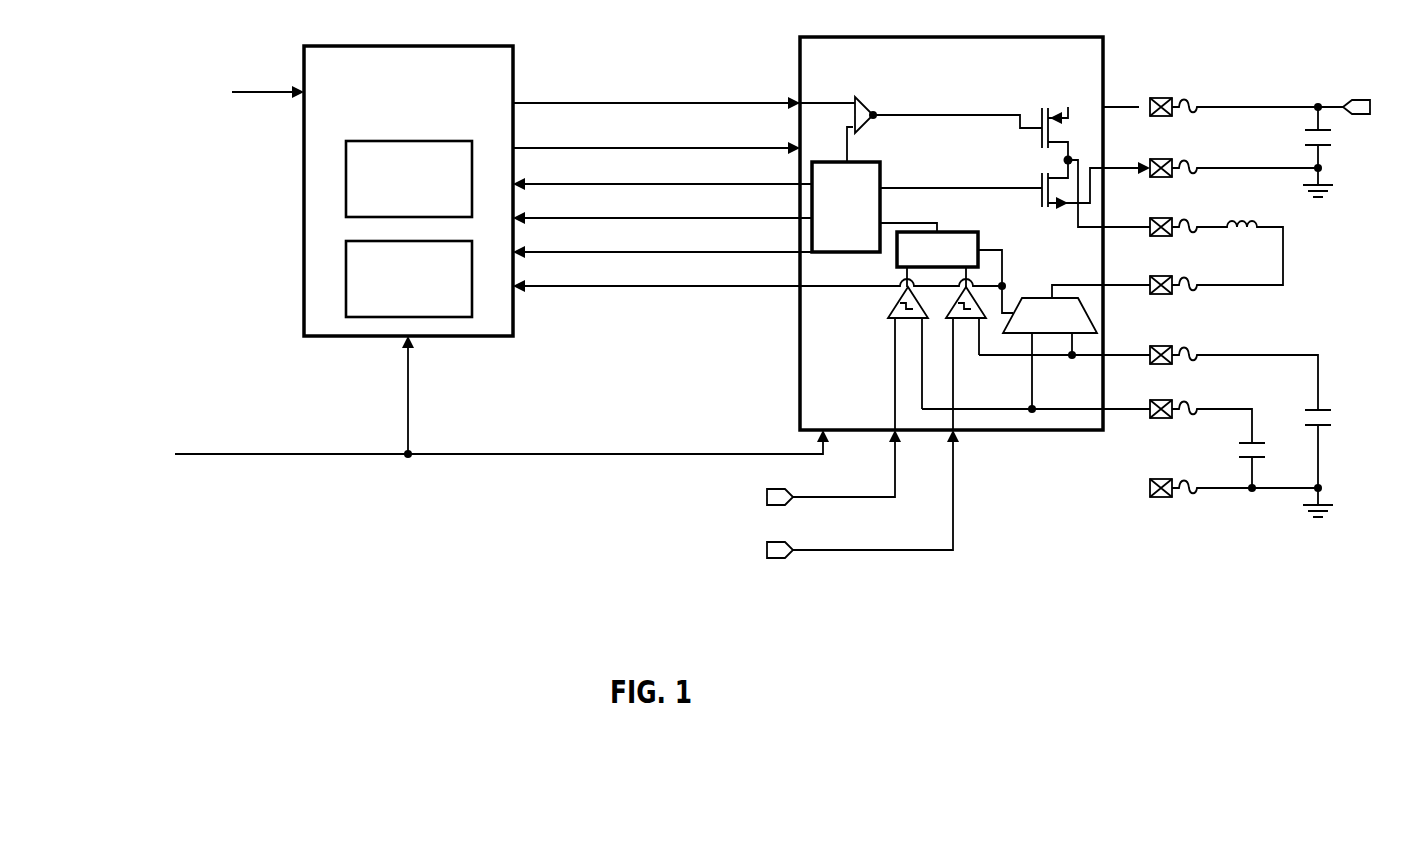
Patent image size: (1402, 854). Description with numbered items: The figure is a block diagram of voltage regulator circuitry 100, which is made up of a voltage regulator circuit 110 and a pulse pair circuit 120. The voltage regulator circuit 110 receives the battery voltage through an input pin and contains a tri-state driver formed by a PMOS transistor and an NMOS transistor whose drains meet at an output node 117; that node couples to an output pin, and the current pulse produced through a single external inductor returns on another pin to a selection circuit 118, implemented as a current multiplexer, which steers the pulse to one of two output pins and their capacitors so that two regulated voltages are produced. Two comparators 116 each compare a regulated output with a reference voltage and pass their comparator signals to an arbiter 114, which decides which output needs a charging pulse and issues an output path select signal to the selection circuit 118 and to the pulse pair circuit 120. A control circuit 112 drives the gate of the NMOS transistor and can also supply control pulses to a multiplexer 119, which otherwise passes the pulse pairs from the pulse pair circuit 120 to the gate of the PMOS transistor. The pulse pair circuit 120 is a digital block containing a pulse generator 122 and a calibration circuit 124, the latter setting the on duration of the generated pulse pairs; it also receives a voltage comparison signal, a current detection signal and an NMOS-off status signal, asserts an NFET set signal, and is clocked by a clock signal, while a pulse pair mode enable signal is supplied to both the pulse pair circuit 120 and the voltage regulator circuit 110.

The circuitry 100 is at (114, 551).
The voltage regulator circuit 110 is at (797, 350).
The control circuit 112 is at (882, 170).
The arbiter 114 is at (960, 232).
The comparators 116 is at (990, 371).
The output node 117 is at (1071, 157).
The selection circuit 118 is at (1051, 336).
The multiplexer 119 is at (869, 104).
The pulse pair circuit 120 is at (378, 340).
The pulse generator 122 is at (345, 181).
The calibration circuit 124 is at (345, 276).